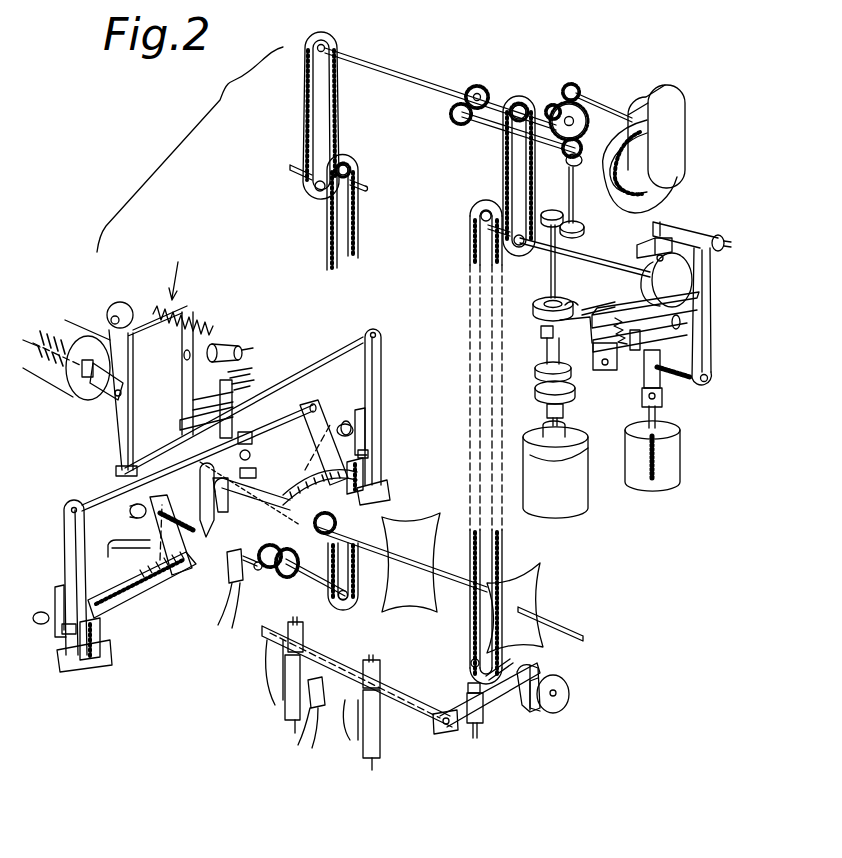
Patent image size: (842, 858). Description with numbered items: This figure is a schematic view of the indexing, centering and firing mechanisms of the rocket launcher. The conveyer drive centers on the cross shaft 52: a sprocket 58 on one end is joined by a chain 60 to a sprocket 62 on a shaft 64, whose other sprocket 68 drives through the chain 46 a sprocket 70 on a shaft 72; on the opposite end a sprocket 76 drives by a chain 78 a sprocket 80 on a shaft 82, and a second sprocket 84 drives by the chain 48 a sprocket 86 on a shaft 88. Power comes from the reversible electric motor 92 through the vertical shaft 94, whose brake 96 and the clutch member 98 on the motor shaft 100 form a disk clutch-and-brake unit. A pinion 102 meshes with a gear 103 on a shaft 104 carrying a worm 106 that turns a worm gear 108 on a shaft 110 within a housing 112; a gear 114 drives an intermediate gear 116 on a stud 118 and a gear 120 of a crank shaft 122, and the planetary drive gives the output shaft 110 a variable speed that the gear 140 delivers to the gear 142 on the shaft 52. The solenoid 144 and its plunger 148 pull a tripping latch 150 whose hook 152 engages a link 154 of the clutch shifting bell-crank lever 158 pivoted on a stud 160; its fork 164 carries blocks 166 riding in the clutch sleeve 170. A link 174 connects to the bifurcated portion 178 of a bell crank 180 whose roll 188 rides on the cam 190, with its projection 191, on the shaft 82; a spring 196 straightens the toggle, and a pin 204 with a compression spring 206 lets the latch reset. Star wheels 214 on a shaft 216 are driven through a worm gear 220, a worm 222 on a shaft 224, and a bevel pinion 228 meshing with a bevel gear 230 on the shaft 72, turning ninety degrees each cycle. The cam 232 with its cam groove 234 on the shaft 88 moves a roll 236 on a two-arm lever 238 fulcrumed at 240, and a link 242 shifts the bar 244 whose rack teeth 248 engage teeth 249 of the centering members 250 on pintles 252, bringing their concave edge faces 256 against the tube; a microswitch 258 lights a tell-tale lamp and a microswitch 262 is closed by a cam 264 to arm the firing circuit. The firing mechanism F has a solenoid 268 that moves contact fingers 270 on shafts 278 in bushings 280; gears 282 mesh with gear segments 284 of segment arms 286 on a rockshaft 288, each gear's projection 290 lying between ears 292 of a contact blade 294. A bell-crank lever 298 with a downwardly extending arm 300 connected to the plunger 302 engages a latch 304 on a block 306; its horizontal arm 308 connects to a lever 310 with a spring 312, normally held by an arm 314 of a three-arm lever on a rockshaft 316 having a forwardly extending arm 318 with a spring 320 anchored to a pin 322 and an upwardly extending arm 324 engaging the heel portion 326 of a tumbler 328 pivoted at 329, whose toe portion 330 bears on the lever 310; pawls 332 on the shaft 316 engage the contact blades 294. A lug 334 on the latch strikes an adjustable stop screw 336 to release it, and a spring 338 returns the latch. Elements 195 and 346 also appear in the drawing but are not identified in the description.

The chain 46 is at (327, 248).
The chain 48 is at (469, 262).
The cross shaft 52 is at (398, 78).
The sprocket 58 is at (326, 46).
The chain 60 is at (300, 100).
The sprocket 62 is at (305, 186).
The shaft 64 is at (367, 188).
The sprocket 68 is at (350, 168).
The sprocket 70 is at (346, 600).
The shaft 72 is at (303, 575).
The sprocket 76 is at (522, 106).
The chain 78 is at (505, 152).
The sprocket 80 is at (519, 248).
The shaft 82 is at (588, 260).
The second sprocket 84 is at (470, 232).
The sprocket 86 is at (470, 662).
The shaft 88 is at (505, 664).
The reversible electric motor 92 is at (578, 494).
The vertical shaft 94 is at (560, 262).
The brake 96 is at (532, 303).
The clutch member 98 is at (534, 387).
The motor shaft 100 is at (546, 413).
The pinion 102 is at (552, 209).
The gear 103 is at (584, 227).
The shaft 104 is at (586, 195).
The worm 106 is at (568, 162).
The worm gear 108 is at (635, 138).
The shaft 110 is at (492, 124).
The housing 112 is at (662, 195).
The gear 114 is at (585, 140).
The intermediate gear 116 is at (578, 121).
The stud 118 is at (546, 106).
The gear 120 is at (578, 88).
The crank shaft 122 is at (604, 103).
The gear 140 is at (451, 113).
The gear 142 is at (482, 88).
The solenoid 144 is at (672, 460).
The solenoid plunger 148 is at (660, 416).
The tripping latch 150 is at (635, 378).
The hook 152 is at (688, 316).
The link 154 is at (626, 357).
The clutch shifting bell-crank lever 158 is at (600, 310).
The stud 160 is at (632, 328).
The fork 164 is at (581, 350).
The blocks 166 is at (540, 332).
The clutch sleeve 170 is at (546, 356).
The link 174 is at (690, 318).
The bifurcated portion 178 is at (712, 337).
The bell crank 180 is at (712, 258).
The roll 188 is at (660, 236).
The cam 190 is at (690, 282).
The projection 191 is at (656, 258).
The clip 195 is at (571, 303).
The spring 196 is at (639, 339).
The pin 204 is at (710, 378).
The compression spring 206 is at (690, 380).
The star wheels 214 is at (450, 511).
The shaft 216 is at (577, 630).
The worm gear 220 is at (340, 533).
The worm 222 is at (336, 520).
The shaft 224 is at (304, 560).
The bevel pinion 228 is at (276, 548).
The bevel gear 230 is at (272, 586).
The cam 232 is at (560, 678).
The cam groove 234 is at (530, 710).
The roll 236 is at (538, 668).
The two-arm lever 238 is at (507, 697).
The fulcrum 240 is at (480, 732).
The link 242 is at (443, 734).
The bar 244 is at (330, 668).
The rack teeth 248 is at (397, 690).
The teeth 249 is at (389, 668).
The vertical centering members 250 is at (284, 705).
The pintles 252 is at (290, 728).
The concave edge faces 256 is at (268, 664).
The microswitch 258 is at (305, 729).
The microswitch 262 is at (241, 588).
The cam 264 is at (261, 574).
The solenoid 268 is at (50, 318).
The contact fingers 270 is at (197, 530).
The shafts 278 is at (370, 453).
The bushings 280 is at (150, 614).
The gears 282 is at (259, 493).
The gear segments 284 is at (248, 542).
The segment arms 286 is at (140, 530).
The rockshaft 288 is at (199, 455).
The projection 290 is at (370, 476).
The ears 292 is at (385, 496).
The contact blade 294 is at (368, 413).
The bell-crank lever 298 is at (126, 302).
The downwardly extending arm 300 is at (148, 391).
The plunger 302 is at (84, 400).
The latch 304 is at (116, 470).
The block 306 is at (122, 415).
The horizontal arm 308 is at (160, 340).
The lever 310 is at (186, 378).
The spring 312 is at (190, 318).
The arm 314 is at (185, 422).
The transverse rockshaft 316 is at (314, 372).
The forwardly extending arm 318 is at (252, 442).
The spring 320 is at (252, 457).
The pin 322 is at (266, 478).
The upwardly extending arm 324 is at (233, 420).
The heel portion 326 is at (248, 374).
The tumbler 328 is at (230, 345).
The pivot 329 is at (250, 350).
The toe portion 330 is at (193, 404).
The pawls 332 is at (383, 357).
The lug 334 is at (212, 532).
The adjustable stop screw 336 is at (186, 531).
The spring 338 is at (195, 485).
The pin 346 is at (350, 423).
The firing mechanism F is at (170, 268).